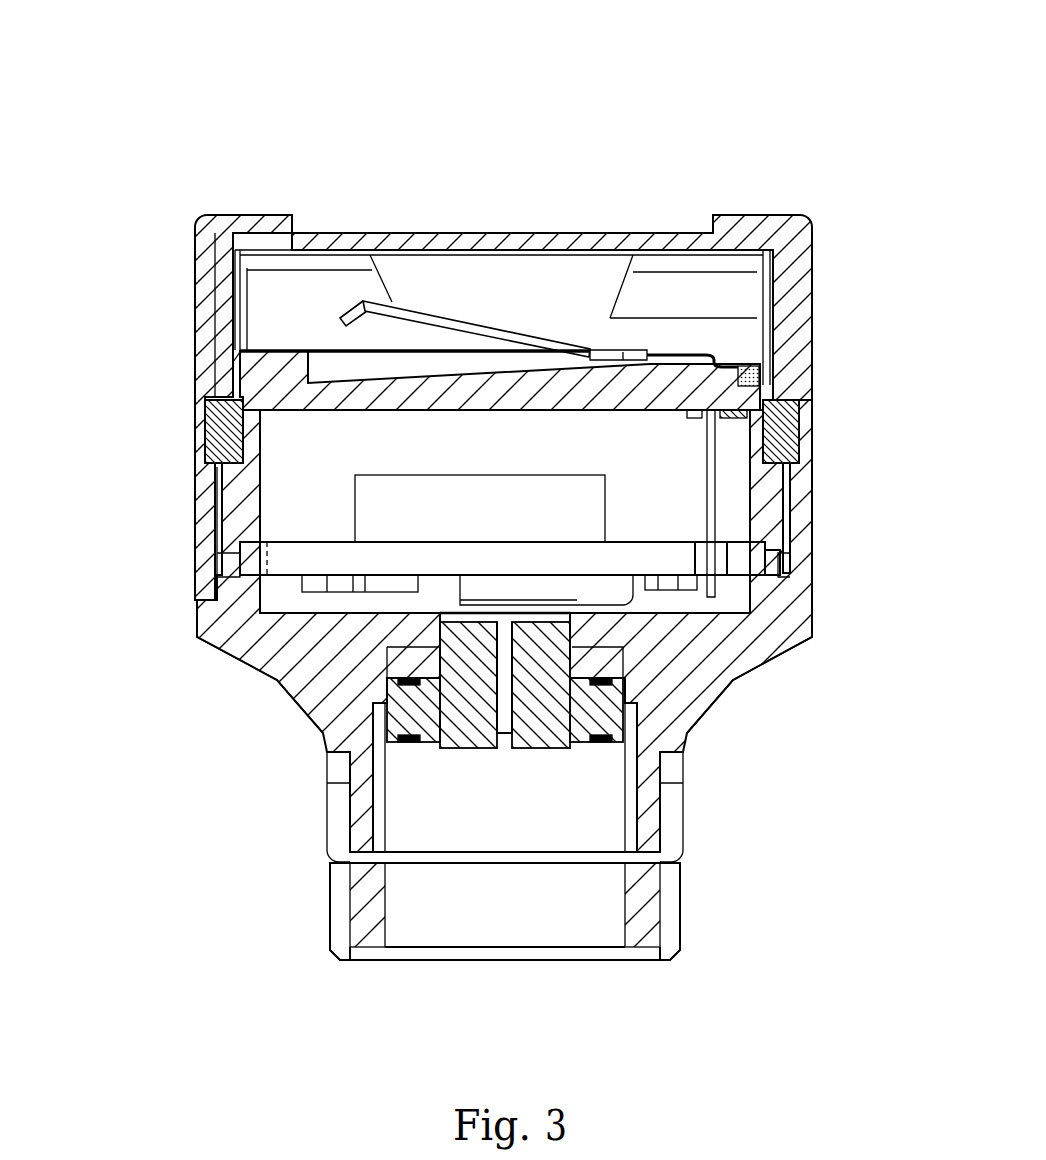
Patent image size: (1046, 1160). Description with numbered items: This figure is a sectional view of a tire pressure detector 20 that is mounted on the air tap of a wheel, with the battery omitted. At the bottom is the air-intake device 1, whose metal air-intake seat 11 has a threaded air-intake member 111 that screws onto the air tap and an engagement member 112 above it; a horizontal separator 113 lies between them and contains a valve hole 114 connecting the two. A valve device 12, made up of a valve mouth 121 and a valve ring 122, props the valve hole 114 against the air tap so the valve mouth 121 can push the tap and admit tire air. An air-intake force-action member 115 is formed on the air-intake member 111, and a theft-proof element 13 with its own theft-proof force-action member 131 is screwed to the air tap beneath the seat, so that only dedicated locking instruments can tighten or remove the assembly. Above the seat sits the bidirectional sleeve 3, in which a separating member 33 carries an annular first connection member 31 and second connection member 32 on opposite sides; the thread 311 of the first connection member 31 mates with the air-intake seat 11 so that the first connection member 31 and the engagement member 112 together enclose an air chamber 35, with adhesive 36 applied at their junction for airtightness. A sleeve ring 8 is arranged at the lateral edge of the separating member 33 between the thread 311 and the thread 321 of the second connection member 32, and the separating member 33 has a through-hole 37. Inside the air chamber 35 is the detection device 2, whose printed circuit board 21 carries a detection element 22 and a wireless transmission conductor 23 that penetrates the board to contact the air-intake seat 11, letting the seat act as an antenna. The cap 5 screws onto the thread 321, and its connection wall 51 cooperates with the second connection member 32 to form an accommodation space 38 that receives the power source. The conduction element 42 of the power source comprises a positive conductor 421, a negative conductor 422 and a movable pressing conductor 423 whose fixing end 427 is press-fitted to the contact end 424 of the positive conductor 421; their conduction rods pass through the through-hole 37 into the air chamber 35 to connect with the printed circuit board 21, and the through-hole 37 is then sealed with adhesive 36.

The air-intake device 1 is at (490, 690).
The detection device 2 is at (850, 708).
The bidirectional sleeve 3 is at (238, 505).
The cap 5 is at (205, 216).
The sleeve ring 8 is at (208, 440).
The air-intake seat 11 is at (203, 605).
The valve device 12 is at (160, 715).
The theft-proof element 13 is at (355, 872).
The tire pressure detector 20 is at (403, 185).
The printed circuit board 21 is at (793, 650).
The detection element 22 is at (607, 520).
The wireless transmission conductor 23 is at (240, 555).
The first connection member 31 is at (798, 483).
The second connection member 32 is at (202, 321).
The separating member 33 is at (286, 346).
The air chamber 35 is at (500, 446).
The adhesive 36 is at (215, 490).
The through-hole 37 is at (705, 405).
The accommodation space 38 is at (325, 290).
The conduction element 42 is at (756, 160).
The connection wall 51 is at (760, 375).
The air-intake member 111 is at (350, 813).
The engagement member 112 is at (772, 500).
The horizontal separator 113 is at (700, 648).
The valve hole 114 is at (420, 659).
The air-intake force-action member 115 is at (668, 850).
The valve mouth 121 is at (430, 680).
The valve ring 122 is at (362, 750).
The theft-proof force-action member 131 is at (450, 957).
The thread 311 is at (782, 546).
The thread 321 is at (232, 358).
The positive conductor 421 is at (504, 333).
The negative conductor 422 is at (727, 355).
The movable pressing conductor 423 is at (598, 250).
The contact end 424 is at (757, 312).
The fixing end 427 is at (770, 268).